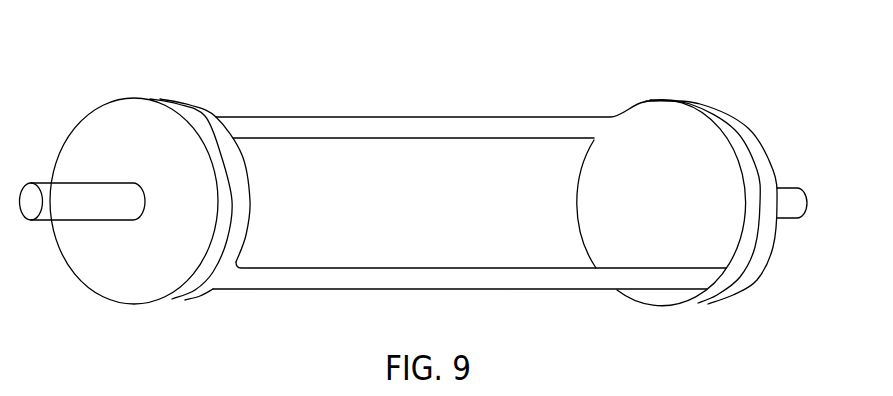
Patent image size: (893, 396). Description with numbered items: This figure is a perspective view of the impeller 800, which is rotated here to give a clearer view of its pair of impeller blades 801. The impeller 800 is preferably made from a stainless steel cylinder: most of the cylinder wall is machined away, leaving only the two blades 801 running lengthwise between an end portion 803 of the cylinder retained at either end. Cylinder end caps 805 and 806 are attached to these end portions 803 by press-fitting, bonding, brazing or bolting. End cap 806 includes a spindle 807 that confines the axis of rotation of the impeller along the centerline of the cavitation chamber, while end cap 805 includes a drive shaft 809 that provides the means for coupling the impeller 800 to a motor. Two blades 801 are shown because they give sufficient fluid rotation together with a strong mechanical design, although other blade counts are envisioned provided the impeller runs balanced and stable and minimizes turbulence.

The impeller 800 is at (570, 84).
The impeller blades 801 is at (442, 122).
The end portion of the cylinder 803 is at (202, 291).
The cylinder end cap 805 is at (120, 285).
The cylinder end cap 806 is at (752, 139).
The spindle 807 is at (796, 203).
The drive shaft 809 is at (83, 200).